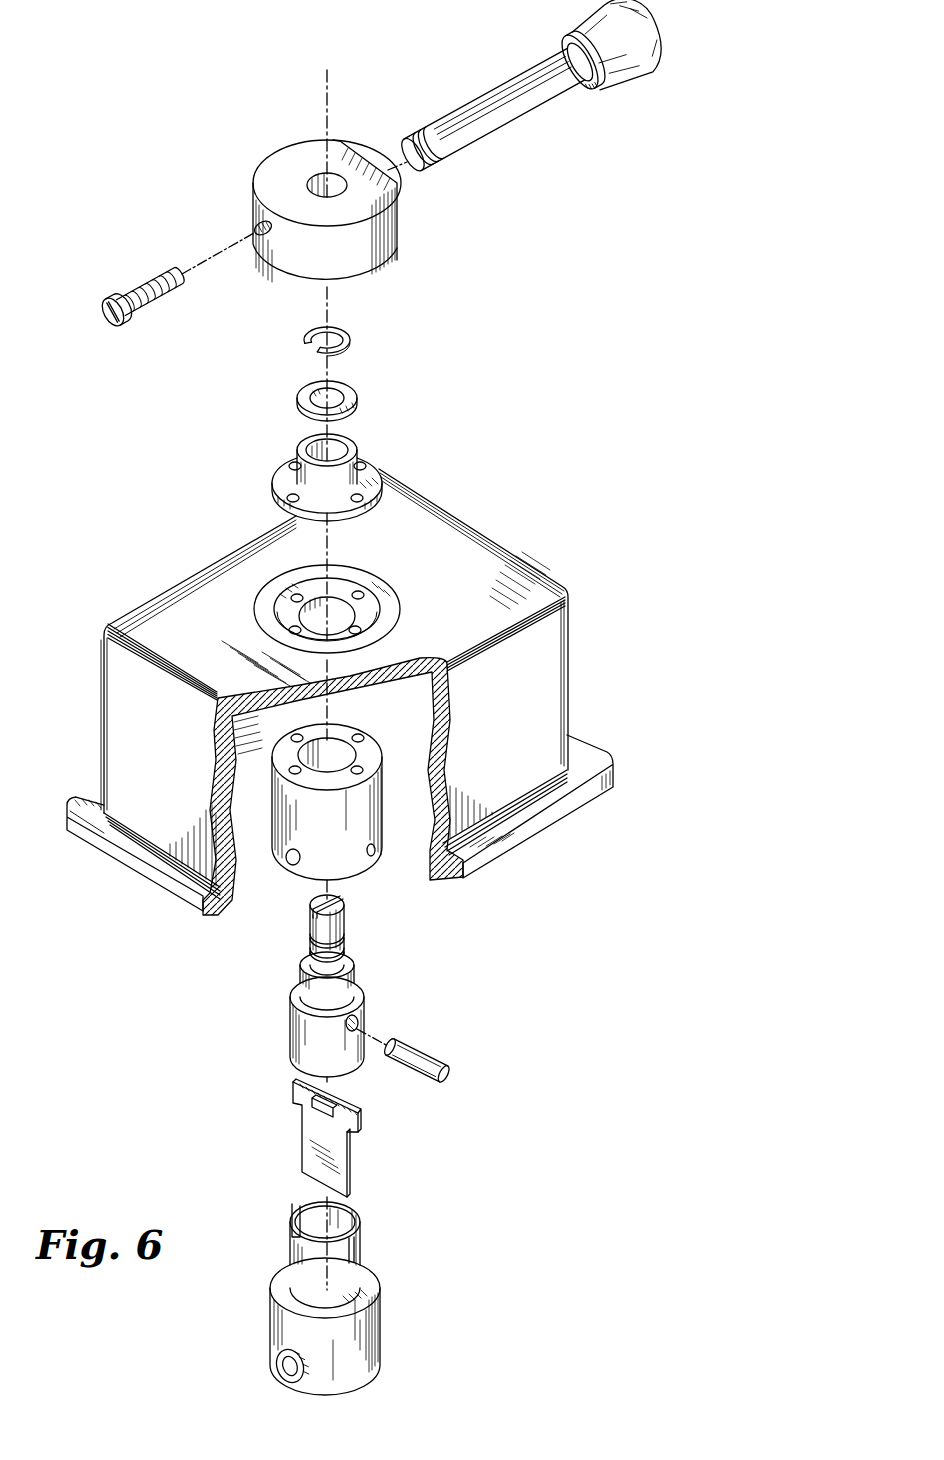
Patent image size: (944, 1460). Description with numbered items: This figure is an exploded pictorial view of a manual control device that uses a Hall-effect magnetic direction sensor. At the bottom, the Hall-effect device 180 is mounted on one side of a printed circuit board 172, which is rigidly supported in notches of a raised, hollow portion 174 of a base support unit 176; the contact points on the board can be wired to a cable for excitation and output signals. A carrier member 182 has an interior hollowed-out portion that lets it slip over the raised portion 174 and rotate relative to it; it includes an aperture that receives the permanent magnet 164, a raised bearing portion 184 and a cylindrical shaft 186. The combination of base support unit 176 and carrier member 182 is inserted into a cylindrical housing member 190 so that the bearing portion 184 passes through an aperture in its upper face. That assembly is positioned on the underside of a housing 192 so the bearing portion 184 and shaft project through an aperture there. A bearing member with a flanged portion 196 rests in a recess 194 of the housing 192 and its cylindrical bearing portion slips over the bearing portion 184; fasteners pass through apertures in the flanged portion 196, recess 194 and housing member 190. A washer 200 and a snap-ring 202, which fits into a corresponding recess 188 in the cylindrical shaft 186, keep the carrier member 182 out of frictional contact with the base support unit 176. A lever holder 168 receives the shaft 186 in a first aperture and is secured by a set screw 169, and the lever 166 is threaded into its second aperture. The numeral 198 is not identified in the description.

The permanent magnet 164 is at (415, 1053).
The lever 166 is at (527, 88).
The lever holder 168 is at (280, 162).
The set screw 169 is at (155, 287).
The printed circuit board 172 is at (350, 1170).
The raised, hollow portion 174 is at (370, 1268).
The base support unit 176 is at (365, 1333).
The Hall-effect device 180 is at (317, 1110).
The carrier member 182 is at (363, 1005).
The raised, bearing portion 184 is at (345, 987).
The cylindrical shaft 186 is at (313, 925).
The recess 188 is at (343, 952).
The cylindrical housing member 190 is at (292, 873).
The housing 192 is at (575, 643).
The recess 194 is at (370, 610).
The flanged portion 196 is at (272, 477).
The hub 198 is at (357, 452).
The washer 200 is at (360, 392).
The snap-ring 202 is at (347, 335).